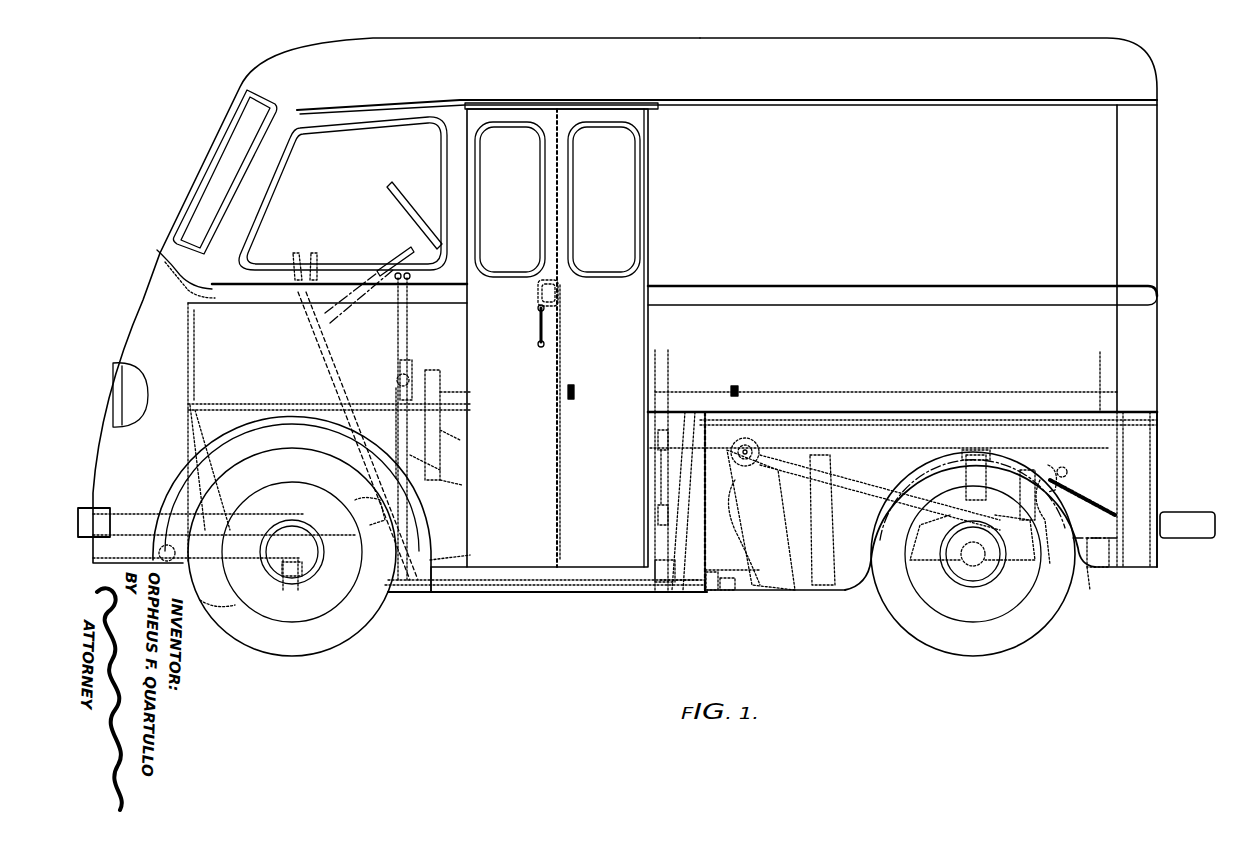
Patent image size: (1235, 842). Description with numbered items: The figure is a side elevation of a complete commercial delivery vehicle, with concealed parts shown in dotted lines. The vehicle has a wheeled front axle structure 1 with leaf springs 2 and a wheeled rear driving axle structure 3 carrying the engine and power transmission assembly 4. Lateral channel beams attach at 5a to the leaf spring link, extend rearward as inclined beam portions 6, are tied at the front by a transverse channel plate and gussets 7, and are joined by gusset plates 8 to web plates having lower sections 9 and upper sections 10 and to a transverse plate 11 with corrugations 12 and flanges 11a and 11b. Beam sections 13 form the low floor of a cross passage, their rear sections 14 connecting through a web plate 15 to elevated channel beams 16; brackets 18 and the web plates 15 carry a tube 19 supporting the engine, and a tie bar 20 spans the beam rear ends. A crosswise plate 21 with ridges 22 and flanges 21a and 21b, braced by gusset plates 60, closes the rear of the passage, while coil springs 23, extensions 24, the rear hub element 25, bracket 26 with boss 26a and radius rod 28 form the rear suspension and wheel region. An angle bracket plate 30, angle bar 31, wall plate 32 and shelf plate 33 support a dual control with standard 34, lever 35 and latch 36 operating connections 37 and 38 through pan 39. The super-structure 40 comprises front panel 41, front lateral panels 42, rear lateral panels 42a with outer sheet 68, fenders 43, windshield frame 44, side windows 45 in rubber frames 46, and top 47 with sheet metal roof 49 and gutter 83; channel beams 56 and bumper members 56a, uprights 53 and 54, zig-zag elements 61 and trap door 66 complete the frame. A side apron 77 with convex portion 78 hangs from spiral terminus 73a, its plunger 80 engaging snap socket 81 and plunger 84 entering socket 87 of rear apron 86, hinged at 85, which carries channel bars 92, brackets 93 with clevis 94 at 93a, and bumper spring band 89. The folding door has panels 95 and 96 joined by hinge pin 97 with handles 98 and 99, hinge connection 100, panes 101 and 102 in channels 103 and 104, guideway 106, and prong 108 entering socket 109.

The wheeled front axle structure 1 is at (300, 600).
The leaf springs 2 is at (225, 590).
The wheeled rear driving axle structure 3 is at (990, 590).
The engine and power transmission assembly 4 is at (840, 590).
The rear attachment of channel beam 5a is at (385, 585).
The beam portion 6 is at (258, 512).
The transverse channel plate and gussets 7 is at (103, 498).
The gusset plates 8 is at (348, 455).
The lower section of web plate 9 is at (382, 515).
The upper section of web plate 10 is at (410, 458).
The transverse plate 11 is at (445, 483).
The forwardly extending flange 11a is at (440, 392).
The rearwardly directed flange 11b is at (450, 560).
The stiffening ribs or corrugations 12 is at (445, 438).
The continuing beam sections 13 is at (375, 590).
The parallel rear sections of beam 14 is at (755, 590).
The web plate 15 is at (728, 527).
The channel beam 16 is at (840, 452).
The bracket 18 is at (775, 455).
The tube 19 is at (760, 480).
The transverse tie bar 20 is at (1150, 412).
The crosswise extending plate 21 is at (650, 482).
The rearwardly extending flange 21a is at (660, 412).
The forwardly directed flange 21b is at (650, 575).
The corrugations or reinforcing ridges 22 is at (650, 444).
The coil springs 23 is at (965, 488).
The extensions from the rear axle 24 is at (1020, 570).
The rear hub 25 is at (1020, 552).
The upstanding bracket 26 is at (1030, 465).
The apertured boss 26a is at (1065, 480).
The radius rod 28 is at (990, 490).
The angle bracket plate 30 is at (225, 486).
The angle bar 31 is at (188, 420).
The wall plate 32 is at (190, 343).
The front merchandise shelf plate 33 is at (268, 404).
The standard 34 is at (412, 385).
The lever 35 is at (415, 330).
The lever-carried latch 36 is at (395, 300).
The connection 37 is at (400, 438).
The connection 38 is at (395, 388).
The splash-proof sled-like pan 39 is at (493, 594).
The super-structure of the composite body 40 is at (902, 268).
The front panel 41 is at (145, 292).
The front lateral panels 42 is at (327, 423).
The rear lateral panels 42a is at (902, 459).
The front wheel fenders 43 is at (220, 452).
The windshield frame 44 is at (250, 176).
The side windows 45 is at (344, 193).
The rubber bead frames 46 is at (357, 118).
The top 47 is at (596, 47).
The sheet metal roof 49 is at (818, 42).
The uprights 53 is at (660, 350).
The roof-supporting uprights 54 is at (1100, 360).
The channel beams 56 is at (668, 600).
The channel shaped members 56a is at (682, 630).
The gusset plates 60 is at (690, 412).
The zig-zag elements 61 is at (915, 392).
The insulated trap door 66 is at (680, 400).
The outer sheet 68 is at (1052, 258).
The spiral terminus 73a is at (985, 410).
The side apron 77 is at (855, 430).
The fender-simulating convex portion 78 is at (925, 448).
The spear-head shaped plunger 80 is at (713, 590).
The snap socket 81 is at (728, 590).
The gutter 83 is at (842, 100).
The spear-shaped plunger 84 is at (1110, 590).
The hinge 85 is at (1160, 412).
The rear apron 86 is at (1160, 452).
The spring socket 87 is at (1110, 567).
The spring band 89 is at (1205, 540).
The channel bars 92 is at (1160, 473).
The bracket 93 is at (1110, 500).
The clevis attachment point 93a is at (1090, 482).
The clevis 94 is at (1045, 505).
The door panel 95 is at (509, 355).
The door panel 96 is at (607, 330).
The hinge pin 97 is at (565, 320).
The flat handle 98 is at (545, 287).
The outside handle 99 is at (538, 326).
The hinge connection 100 is at (652, 258).
The window pane 101 is at (510, 199).
The window pane 102 is at (604, 199).
The rubber framing channel 103 is at (485, 140).
The rubber framing channel 104 is at (630, 140).
The oblique guideway 106 is at (606, 104).
The spear head prong 108 is at (576, 390).
The spring socket 109 is at (738, 385).